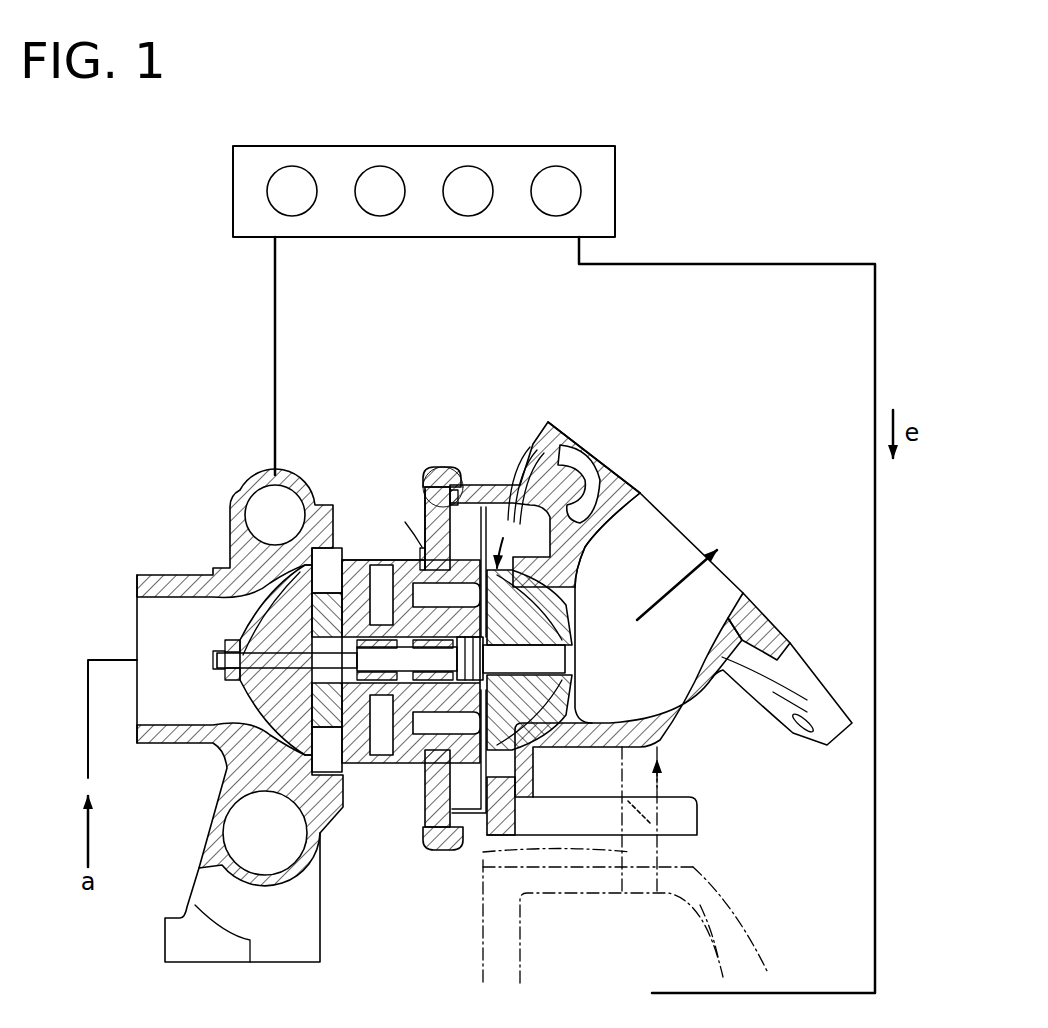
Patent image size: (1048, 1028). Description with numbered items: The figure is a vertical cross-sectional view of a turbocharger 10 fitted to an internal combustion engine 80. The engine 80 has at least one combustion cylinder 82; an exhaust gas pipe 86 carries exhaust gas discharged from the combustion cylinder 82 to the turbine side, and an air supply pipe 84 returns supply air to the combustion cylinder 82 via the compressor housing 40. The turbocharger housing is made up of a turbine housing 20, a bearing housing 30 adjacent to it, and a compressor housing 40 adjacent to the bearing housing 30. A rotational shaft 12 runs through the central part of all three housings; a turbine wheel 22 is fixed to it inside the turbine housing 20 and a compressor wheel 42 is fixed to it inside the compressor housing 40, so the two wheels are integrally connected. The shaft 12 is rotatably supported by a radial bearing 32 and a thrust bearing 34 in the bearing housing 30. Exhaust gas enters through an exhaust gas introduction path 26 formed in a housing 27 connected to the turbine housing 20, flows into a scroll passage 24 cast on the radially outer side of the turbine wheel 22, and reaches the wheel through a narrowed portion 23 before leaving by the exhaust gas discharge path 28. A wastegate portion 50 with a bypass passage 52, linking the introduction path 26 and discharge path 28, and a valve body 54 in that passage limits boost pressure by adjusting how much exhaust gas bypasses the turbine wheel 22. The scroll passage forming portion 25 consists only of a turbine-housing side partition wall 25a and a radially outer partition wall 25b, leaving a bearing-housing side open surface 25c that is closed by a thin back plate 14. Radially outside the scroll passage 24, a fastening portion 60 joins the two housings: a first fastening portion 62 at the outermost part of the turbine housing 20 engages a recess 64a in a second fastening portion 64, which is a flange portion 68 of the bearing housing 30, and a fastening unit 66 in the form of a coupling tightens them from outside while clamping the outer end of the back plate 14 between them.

The turbocharger 10 is at (398, 300).
The rotational shaft 12 is at (405, 668).
The back plate 14 is at (387, 562).
The turbine housing 20 is at (651, 563).
The turbine wheel 22 is at (583, 605).
The narrowed portion 23 is at (577, 560).
The scroll passage 24 is at (592, 460).
The scroll passage forming portion 25 is at (580, 408).
The turbine-housing side partition wall 25a is at (536, 455).
The radially outer partition wall 25b is at (522, 500).
The bearing-housing side open surface 25c is at (512, 515).
The exhaust gas introduction path 26 is at (668, 932).
The housing 27 is at (743, 927).
The exhaust gas discharge path 28 is at (718, 588).
The bearing housing 30 is at (400, 558).
The radial bearing 32 is at (373, 683).
The thrust bearing 34 is at (322, 545).
The compressor housing 40 is at (245, 480).
The compressor wheel 42 is at (240, 615).
The wastegate portion 50 is at (688, 848).
The bypass passage 52 is at (482, 857).
The valve body 54 is at (642, 805).
The fastening portion 60 is at (426, 595).
The first fastening portion 62 is at (453, 475).
The second fastening portion 64 is at (423, 467).
The recess 64a is at (423, 487).
The fastening unit 66 is at (443, 467).
The flange portion 68 is at (423, 550).
The internal combustion engine 80 is at (530, 146).
The combustion cylinder 82 is at (572, 183).
The air supply pipe 84 is at (275, 312).
The exhaust gas pipe 86 is at (876, 588).